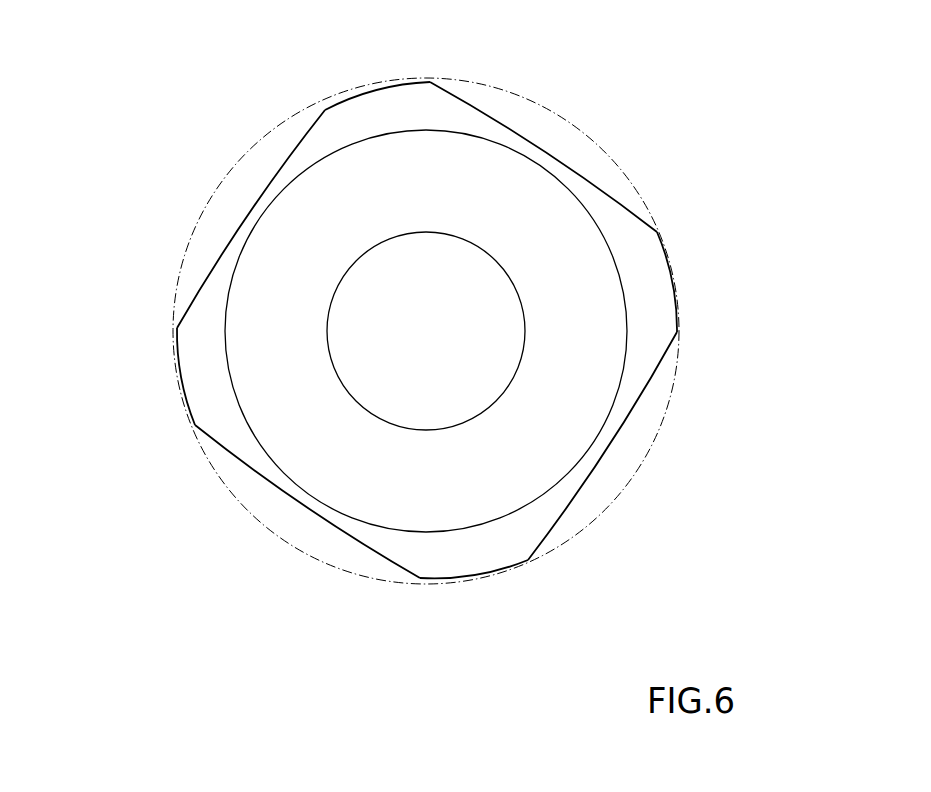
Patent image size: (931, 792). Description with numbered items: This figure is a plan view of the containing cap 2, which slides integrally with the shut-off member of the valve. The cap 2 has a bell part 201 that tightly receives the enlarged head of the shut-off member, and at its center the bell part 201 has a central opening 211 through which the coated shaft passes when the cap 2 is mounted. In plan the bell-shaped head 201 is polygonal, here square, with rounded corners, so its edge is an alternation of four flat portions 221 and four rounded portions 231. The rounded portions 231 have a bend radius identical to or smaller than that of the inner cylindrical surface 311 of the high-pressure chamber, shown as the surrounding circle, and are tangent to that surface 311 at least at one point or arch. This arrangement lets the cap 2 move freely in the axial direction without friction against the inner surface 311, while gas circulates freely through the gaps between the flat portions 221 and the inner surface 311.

The cap 2 is at (381, 362).
The bell part 201 is at (478, 120).
The central opening 211 is at (407, 410).
The flat portions 221 is at (597, 457).
The rounded portions 231 is at (177, 357).
The inner cylindrical surface 311 is at (658, 413).